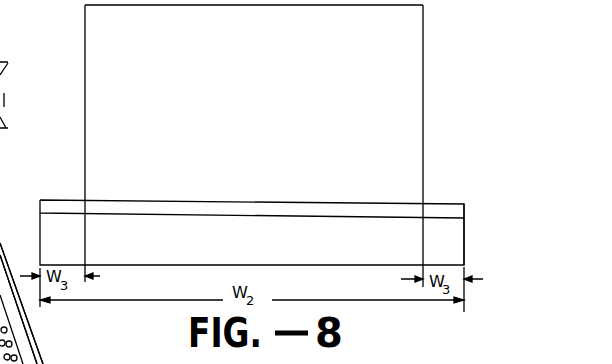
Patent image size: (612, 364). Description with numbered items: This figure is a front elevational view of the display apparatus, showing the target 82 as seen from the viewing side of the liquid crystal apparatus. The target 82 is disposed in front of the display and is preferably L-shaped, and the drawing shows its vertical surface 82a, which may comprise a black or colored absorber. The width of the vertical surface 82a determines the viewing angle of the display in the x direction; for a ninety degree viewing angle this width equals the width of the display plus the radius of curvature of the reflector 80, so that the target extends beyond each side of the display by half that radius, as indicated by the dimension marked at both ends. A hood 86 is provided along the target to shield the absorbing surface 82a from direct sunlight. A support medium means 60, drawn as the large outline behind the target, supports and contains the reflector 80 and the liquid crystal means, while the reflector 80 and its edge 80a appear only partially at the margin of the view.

The support medium means 60 is at (90, 158).
The target 82 is at (277, 203).
The vertical surface 82a is at (466, 213).
The hood 86 is at (206, 206).
The reflector 80 is at (36, 358).
The spacer edge 80a is at (35, 318).